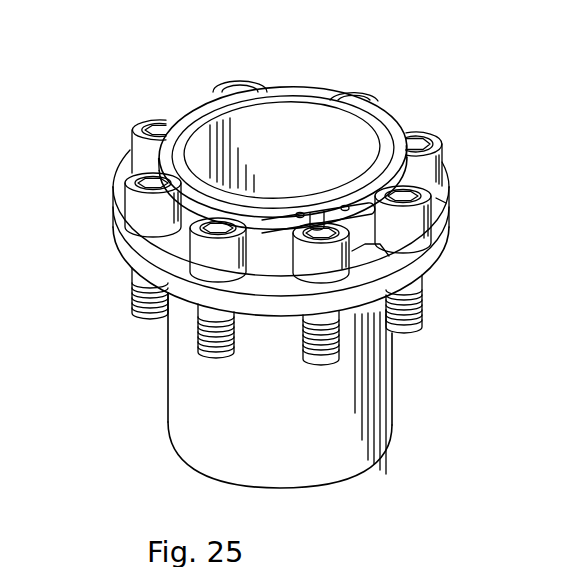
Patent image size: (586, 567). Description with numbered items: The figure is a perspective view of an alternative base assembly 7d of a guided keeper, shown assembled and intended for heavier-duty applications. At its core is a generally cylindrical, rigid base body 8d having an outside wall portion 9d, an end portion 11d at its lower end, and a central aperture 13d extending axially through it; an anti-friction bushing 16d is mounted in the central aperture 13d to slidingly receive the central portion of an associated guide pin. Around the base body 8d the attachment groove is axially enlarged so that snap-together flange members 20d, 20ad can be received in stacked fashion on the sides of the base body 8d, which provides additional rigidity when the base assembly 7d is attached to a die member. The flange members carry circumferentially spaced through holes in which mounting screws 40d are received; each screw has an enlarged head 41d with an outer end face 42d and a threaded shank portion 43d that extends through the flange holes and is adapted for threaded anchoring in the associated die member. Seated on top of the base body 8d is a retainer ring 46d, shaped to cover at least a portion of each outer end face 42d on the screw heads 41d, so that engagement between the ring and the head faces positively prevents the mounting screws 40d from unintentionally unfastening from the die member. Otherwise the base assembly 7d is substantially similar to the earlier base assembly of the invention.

The base assembly 7d is at (484, 111).
The base body 8d is at (158, 413).
The outside wall portion 9d is at (182, 355).
The second end portion 11d is at (188, 465).
The central aperture 13d is at (264, 107).
The anti-friction bushing 16d is at (300, 127).
The flange member 20d is at (124, 173).
The flange member 20ad is at (440, 200).
The mounting screws 40d is at (121, 122).
The mounting screw heads 41d is at (440, 160).
The outer end faces 42d is at (420, 133).
The threaded shank portions 43d is at (133, 306).
The retainer ring 46d is at (193, 102).